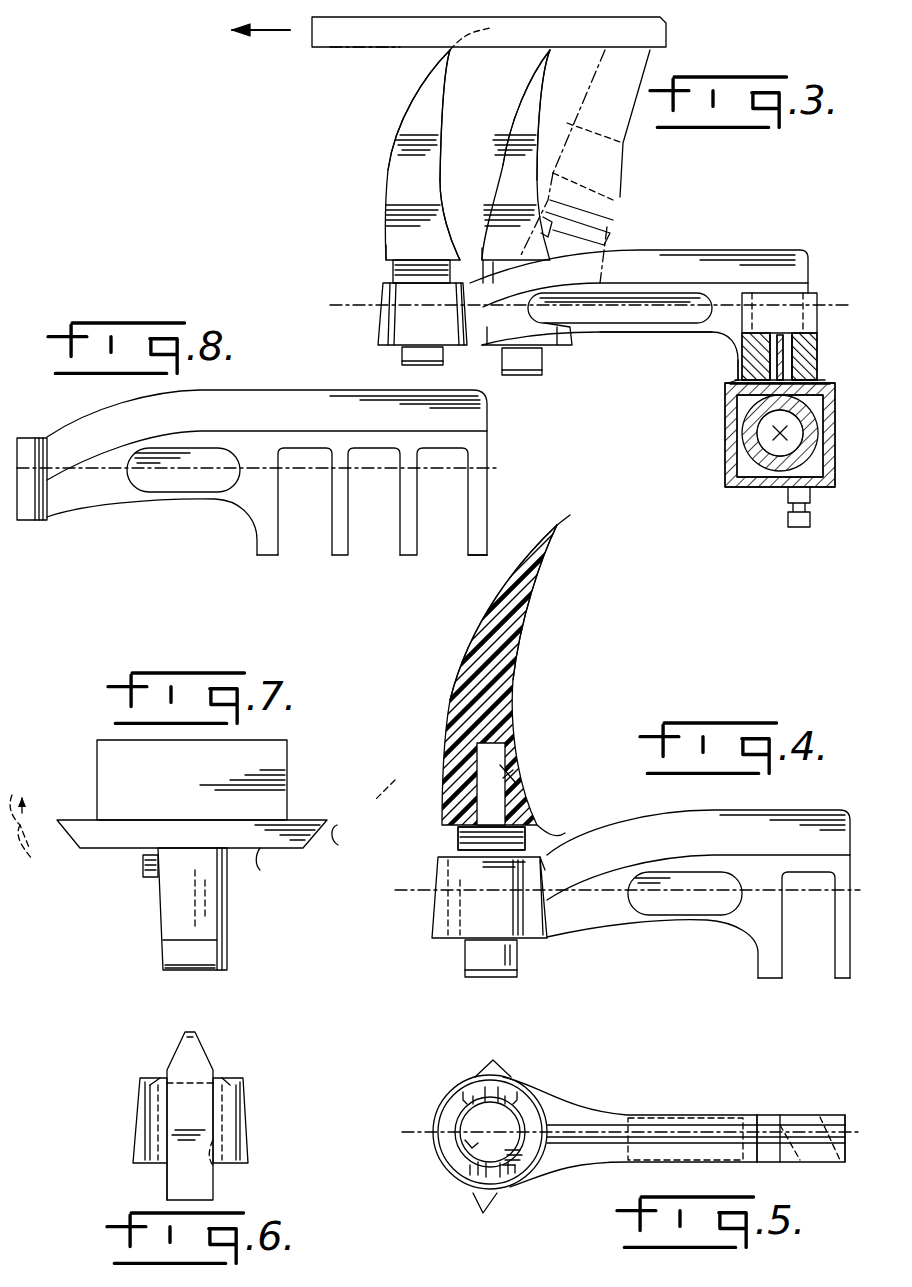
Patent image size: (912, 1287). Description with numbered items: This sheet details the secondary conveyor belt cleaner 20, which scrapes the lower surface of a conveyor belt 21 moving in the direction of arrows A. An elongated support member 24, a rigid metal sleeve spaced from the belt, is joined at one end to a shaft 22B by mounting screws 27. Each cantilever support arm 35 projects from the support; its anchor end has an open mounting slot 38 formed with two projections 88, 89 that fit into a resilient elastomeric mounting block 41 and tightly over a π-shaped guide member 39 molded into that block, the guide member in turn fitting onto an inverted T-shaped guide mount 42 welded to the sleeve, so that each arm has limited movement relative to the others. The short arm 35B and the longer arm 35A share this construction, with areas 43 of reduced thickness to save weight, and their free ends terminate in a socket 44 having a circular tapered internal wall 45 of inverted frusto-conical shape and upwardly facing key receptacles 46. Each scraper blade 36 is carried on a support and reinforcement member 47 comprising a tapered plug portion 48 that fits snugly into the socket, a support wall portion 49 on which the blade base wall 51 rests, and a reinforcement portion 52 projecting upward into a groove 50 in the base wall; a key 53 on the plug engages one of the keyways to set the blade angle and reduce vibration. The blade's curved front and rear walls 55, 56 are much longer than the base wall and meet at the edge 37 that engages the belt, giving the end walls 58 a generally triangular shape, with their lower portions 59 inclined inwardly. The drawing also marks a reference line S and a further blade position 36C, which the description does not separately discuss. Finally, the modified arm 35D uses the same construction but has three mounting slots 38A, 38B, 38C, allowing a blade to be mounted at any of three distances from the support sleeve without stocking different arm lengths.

In FIG. 3, the arrows A is at (265, 34).
In FIG. 3, the longitudinal axis S is at (340, 305).
In FIG. 8, the longitudinal axis S is at (500, 468).
In FIG. 4, the longitudinal axis S is at (402, 890).
In FIG. 6, the longitudinal axis S is at (193, 1107).
In FIG. 5, the longitudinal axis S is at (418, 1133).
In FIG. 3, the secondary conveyor belt cleaner 20 is at (380, 195).
In FIG. 3, the conveyor belt 21 is at (364, 50).
In FIG. 3, the elongated shaft 22B is at (770, 470).
In FIG. 3, the elongated support member 24 is at (722, 480).
In FIG. 3, the mounting screws 27 is at (797, 528).
In FIG. 6, the cantilever support arm 35 is at (197, 1038).
In FIG. 3, the longer cantilever blade support arm 35A is at (693, 249).
In FIG. 3, the short cantilever blade support arm 35B is at (590, 340).
In FIG. 4, the short cantilever blade support arm 35B is at (715, 810).
In FIG. 5, the short cantilever blade support arm 35B is at (607, 1115).
In FIG. 8, the single cantilever arm 35D is at (207, 390).
In FIG. 3, the scraper blade 36 is at (506, 100).
In FIG. 4, the scraper blade 36 is at (518, 673).
In FIG. 7, the scraper blade 36 is at (44, 848).
In FIG. 3, the blade in alternate position 36C is at (640, 167).
In FIG. 3, the edge 37 is at (480, 37).
In FIG. 4, the edge 37 is at (580, 527).
In FIG. 3, the open mounting slot 38 is at (780, 255).
In FIG. 4, the open mounting slot 38 is at (808, 925).
In FIG. 5, the open mounting slot 38 is at (830, 1117).
In FIG. 8, the mounting slot 38A is at (441, 550).
In FIG. 8, the mounting slot 38B is at (372, 550).
In FIG. 8, the mounting slot 38C is at (303, 550).
In FIG. 3, the guide member 39 is at (735, 378).
In FIG. 3, the resilient mounting block 41 is at (812, 293).
In FIG. 3, the guide mount 42 is at (725, 390).
In FIG. 3, the areas of reduced thickness 43 is at (620, 308).
In FIG. 8, the areas of reduced thickness 43 is at (183, 470).
In FIG. 4, the areas of reduced thickness 43 is at (685, 920).
In FIG. 5, the areas of reduced thickness 43 is at (705, 1118).
In FIG. 3, the socket 44 is at (378, 328).
In FIG. 8, the socket 44 is at (40, 520).
In FIG. 4, the socket 44 is at (432, 928).
In FIG. 6, the socket 44 is at (133, 1128).
In FIG. 5, the socket 44 is at (450, 1178).
In FIG. 4, the tapered internal wall 45 is at (458, 950).
In FIG. 6, the tapered internal wall 45 is at (215, 1165).
In FIG. 5, the tapered internal wall 45 is at (462, 1148).
In FIG. 6, the key receptacles 46 is at (145, 1072).
In FIG. 5, the key receptacles 46 is at (493, 1078).
In FIG. 4, the support and reinforcement member 47 is at (452, 838).
In FIG. 7, the support and reinforcement member 47 is at (300, 812).
In FIG. 3, the plug portion 48 is at (401, 358).
In FIG. 4, the plug portion 48 is at (520, 958).
In FIG. 7, the plug portion 48 is at (168, 918).
In FIG. 4, the support wall portion 49 is at (472, 828).
In FIG. 7, the support wall portion 49 is at (273, 866).
In FIG. 4, the reinforcement-receiving groove 50 is at (515, 772).
In FIG. 3, the base wall 51 is at (392, 268).
In FIG. 4, the base wall 51 is at (561, 818).
In FIG. 7, the base wall 51 is at (346, 846).
In FIG. 4, the reinforcement portion 52 is at (508, 738).
In FIG. 7, the reinforcement portion 52 is at (270, 745).
In FIG. 4, the key 53 is at (550, 862).
In FIG. 7, the key 53 is at (142, 878).
In FIG. 3, the front wall 55 is at (405, 115).
In FIG. 4, the front wall 55 is at (480, 615).
In FIG. 3, the rear wall 56 is at (452, 78).
In FIG. 4, the rear wall 56 is at (520, 622).
In FIG. 3, the end walls 58 is at (440, 186).
In FIG. 3, the lower portions 59 is at (385, 232).
In FIG. 4, the lower portions 59 is at (386, 778).
In FIG. 7, the lower portions 59 is at (20, 788).
In FIG. 3, the projection 88 is at (808, 262).
In FIG. 8, the projection 88 is at (490, 515).
In FIG. 4, the projection 88 is at (843, 980).
In FIG. 6, the projection 88 is at (165, 1182).
In FIG. 5, the projection 88 is at (843, 1165).
In FIG. 3, the projection 89 is at (735, 357).
In FIG. 8, the projection 89 is at (256, 548).
In FIG. 4, the projection 89 is at (768, 980).
In FIG. 5, the projection 89 is at (765, 1165).